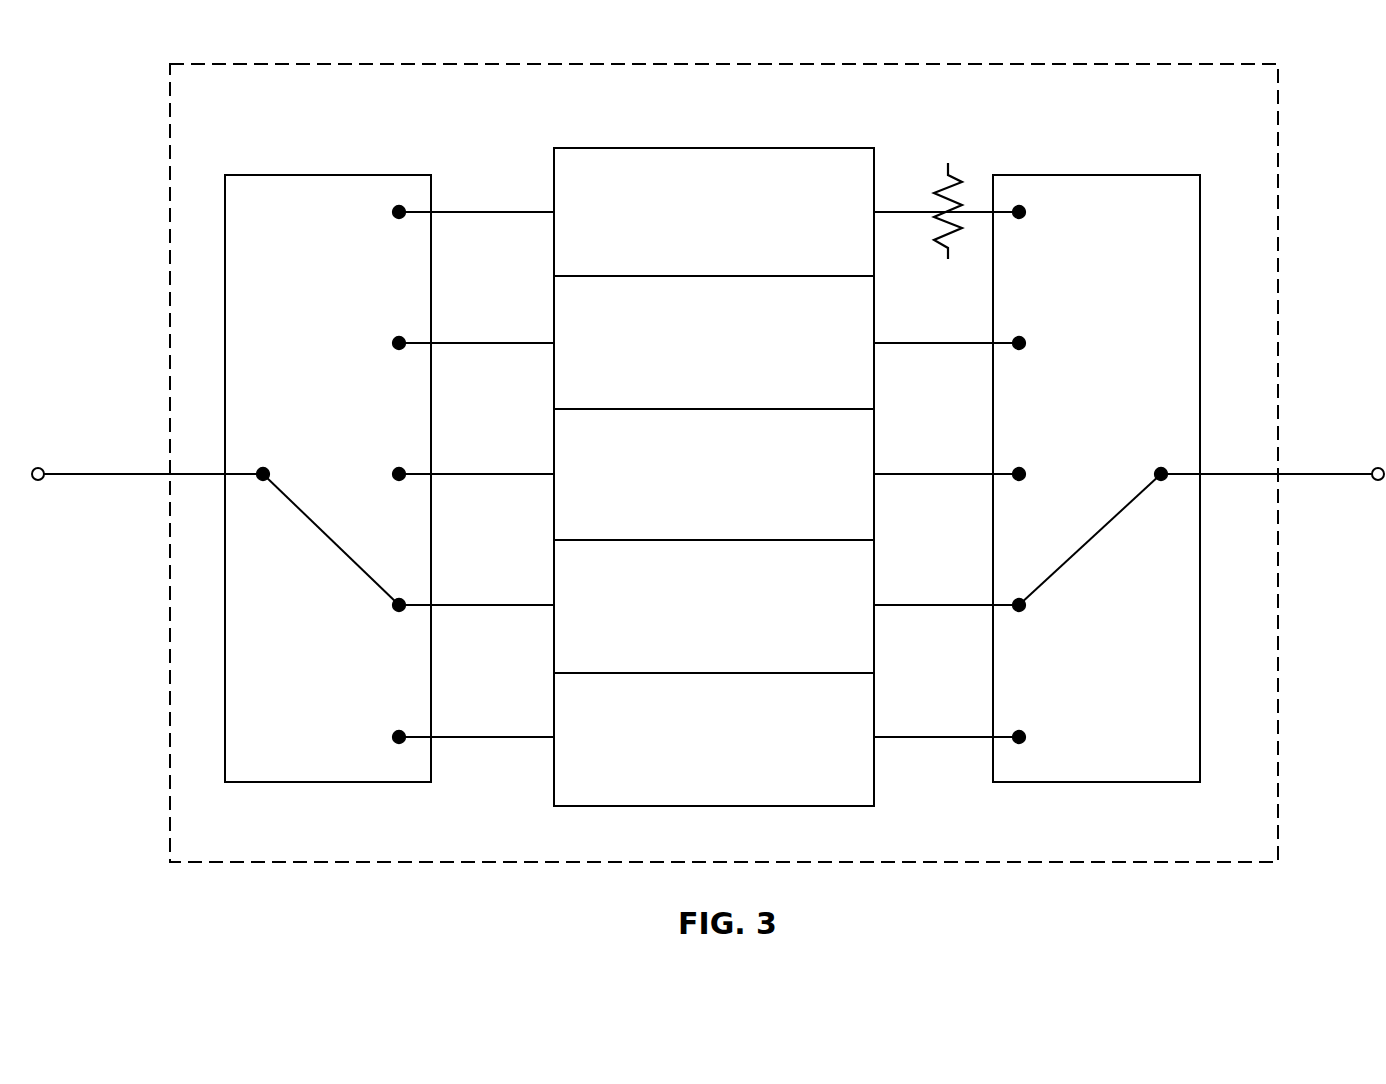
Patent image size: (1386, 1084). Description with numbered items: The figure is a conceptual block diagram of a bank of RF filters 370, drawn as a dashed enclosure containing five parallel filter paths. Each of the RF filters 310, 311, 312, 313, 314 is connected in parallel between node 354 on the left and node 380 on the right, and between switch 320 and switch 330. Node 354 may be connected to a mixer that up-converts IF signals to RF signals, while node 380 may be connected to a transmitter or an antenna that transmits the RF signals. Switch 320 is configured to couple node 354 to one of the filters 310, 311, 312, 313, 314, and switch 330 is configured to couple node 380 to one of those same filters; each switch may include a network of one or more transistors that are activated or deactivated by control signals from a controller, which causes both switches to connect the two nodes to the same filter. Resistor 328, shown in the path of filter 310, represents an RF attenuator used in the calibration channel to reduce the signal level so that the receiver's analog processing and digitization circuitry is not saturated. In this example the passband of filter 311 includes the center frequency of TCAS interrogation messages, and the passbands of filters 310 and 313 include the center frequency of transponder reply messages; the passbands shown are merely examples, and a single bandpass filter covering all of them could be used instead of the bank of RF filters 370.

The bank of RF filters 370 is at (1228, 127).
The node 354 is at (40, 467).
The node 380 is at (1376, 467).
The switch 320 is at (350, 174).
The switch 330 is at (1120, 173).
The resistor 328 is at (948, 160).
The RF filter 310 is at (692, 255).
The RF filter 311 is at (692, 386).
The RF filter 312 is at (692, 516).
The RF filter 313 is at (692, 648).
The RF filter 314 is at (692, 780).